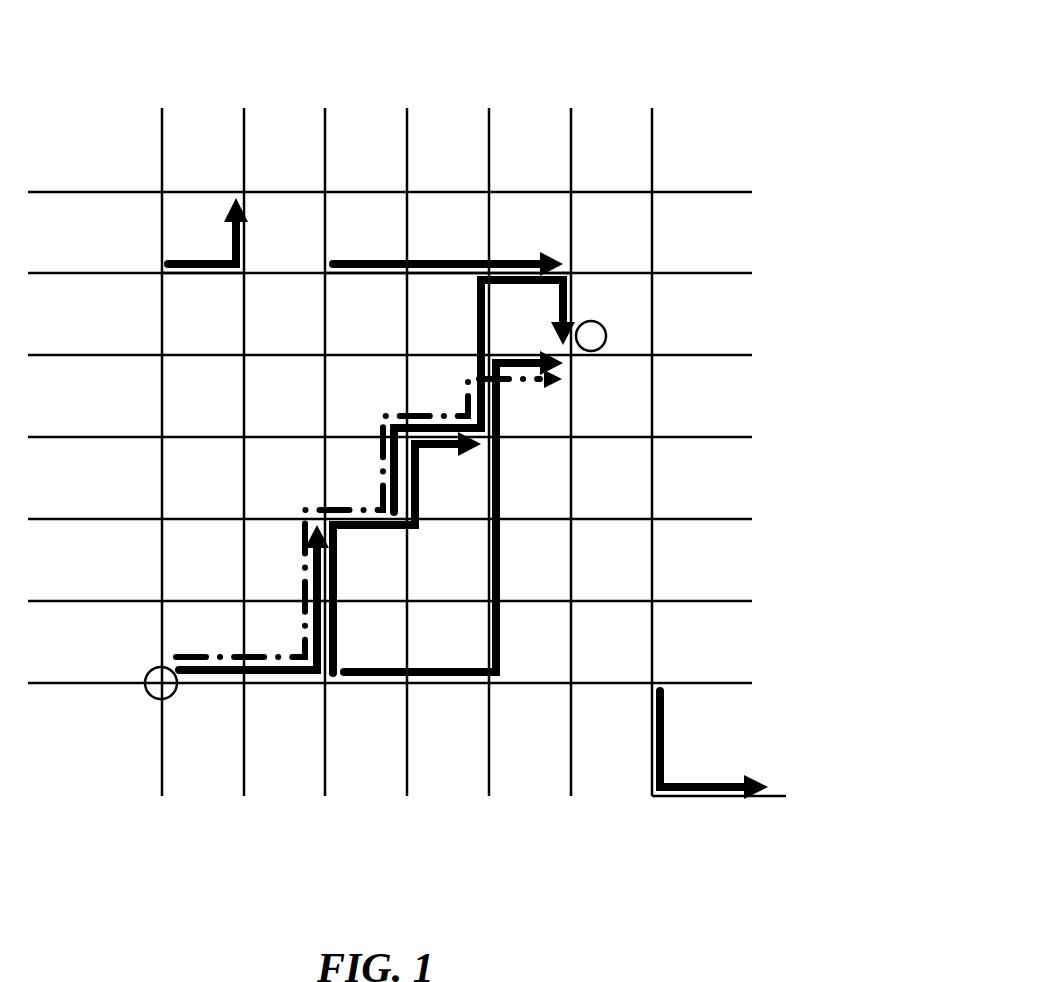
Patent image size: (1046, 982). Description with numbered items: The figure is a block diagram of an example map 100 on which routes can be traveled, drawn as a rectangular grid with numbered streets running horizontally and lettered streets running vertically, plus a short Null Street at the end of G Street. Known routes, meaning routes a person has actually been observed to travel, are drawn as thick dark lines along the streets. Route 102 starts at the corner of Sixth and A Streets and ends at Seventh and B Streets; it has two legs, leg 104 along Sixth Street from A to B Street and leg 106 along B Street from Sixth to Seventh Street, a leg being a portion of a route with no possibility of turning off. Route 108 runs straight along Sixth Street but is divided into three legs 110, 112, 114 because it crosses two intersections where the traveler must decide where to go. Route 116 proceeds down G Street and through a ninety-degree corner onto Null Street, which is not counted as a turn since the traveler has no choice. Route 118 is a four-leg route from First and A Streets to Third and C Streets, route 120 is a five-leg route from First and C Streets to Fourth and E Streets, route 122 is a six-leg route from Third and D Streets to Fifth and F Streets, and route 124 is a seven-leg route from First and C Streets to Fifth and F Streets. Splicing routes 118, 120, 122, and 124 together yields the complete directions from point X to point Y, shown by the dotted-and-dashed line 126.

The map 100 is at (722, 92).
The route 102 is at (234, 213).
The leg 104 is at (194, 277).
The leg 106 is at (222, 206).
The route 108 is at (387, 262).
The leg 110 is at (353, 277).
The leg 112 is at (427, 277).
The leg 114 is at (521, 262).
The route 116 is at (693, 781).
The route 118 is at (218, 668).
The route 120 is at (390, 532).
The route 122 is at (567, 307).
The route 124 is at (503, 555).
The line 126 is at (380, 479).